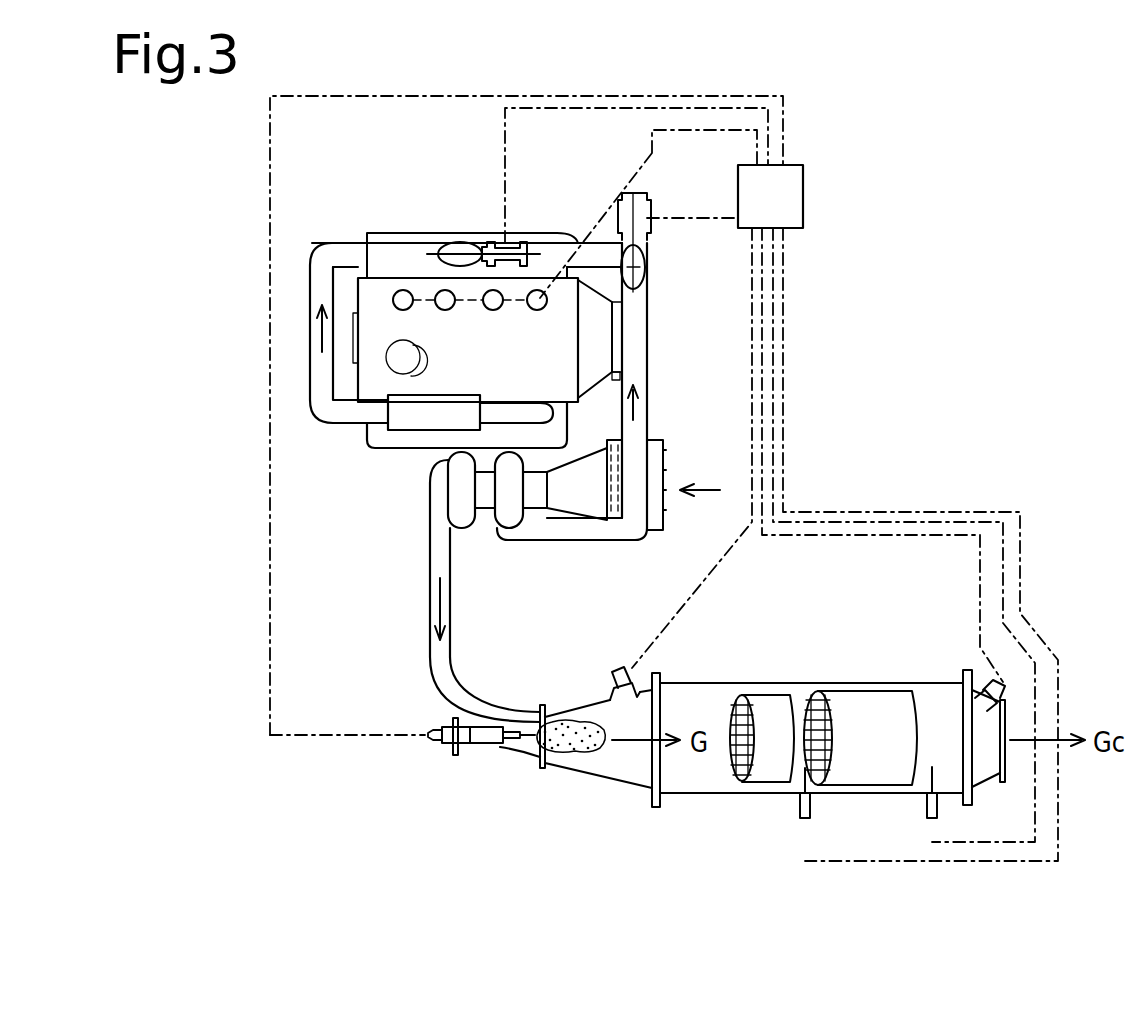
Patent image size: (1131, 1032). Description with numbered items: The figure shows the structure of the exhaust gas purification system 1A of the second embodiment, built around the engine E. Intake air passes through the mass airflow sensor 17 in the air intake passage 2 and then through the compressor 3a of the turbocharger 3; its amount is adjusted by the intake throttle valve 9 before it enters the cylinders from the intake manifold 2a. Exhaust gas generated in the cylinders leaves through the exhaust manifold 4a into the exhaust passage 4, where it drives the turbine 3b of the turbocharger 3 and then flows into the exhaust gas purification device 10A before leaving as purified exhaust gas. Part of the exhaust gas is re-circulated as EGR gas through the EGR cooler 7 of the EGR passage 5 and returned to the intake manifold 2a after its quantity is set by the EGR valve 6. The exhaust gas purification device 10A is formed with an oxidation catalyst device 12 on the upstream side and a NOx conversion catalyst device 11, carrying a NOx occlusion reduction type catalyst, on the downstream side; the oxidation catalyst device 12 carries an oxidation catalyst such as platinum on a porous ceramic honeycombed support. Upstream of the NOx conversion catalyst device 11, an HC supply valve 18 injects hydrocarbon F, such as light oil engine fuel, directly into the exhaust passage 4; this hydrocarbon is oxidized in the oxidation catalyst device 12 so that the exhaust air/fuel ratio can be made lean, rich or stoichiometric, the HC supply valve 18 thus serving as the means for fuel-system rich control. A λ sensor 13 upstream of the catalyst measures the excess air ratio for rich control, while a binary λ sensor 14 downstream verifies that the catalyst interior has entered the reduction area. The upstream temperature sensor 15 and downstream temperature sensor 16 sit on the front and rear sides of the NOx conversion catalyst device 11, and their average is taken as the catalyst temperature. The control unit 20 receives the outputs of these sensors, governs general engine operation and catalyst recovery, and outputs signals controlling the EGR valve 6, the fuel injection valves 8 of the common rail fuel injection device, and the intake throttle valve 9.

The exhaust gas purification system 1A is at (862, 372).
The engine E is at (423, 332).
The air intake passage 2 is at (613, 537).
The intake manifold 2a is at (417, 278).
The turbocharger 3 is at (446, 544).
The compressor 3a is at (510, 510).
The turbine 3b is at (463, 512).
The exhaust passage 4 is at (430, 657).
The exhaust manifold 4a is at (417, 437).
The EGR passage 5 is at (310, 389).
The EGR valve 6 is at (460, 254).
The EGR cooler 7 is at (408, 412).
The fuel injection valves 8 is at (540, 290).
The intake throttle valve 9 is at (646, 268).
The exhaust gas purification device 10A is at (715, 795).
The NOx conversion catalyst device 11 is at (868, 733).
The oxidation catalyst device 12 is at (783, 728).
The upstream λ sensor 13 is at (625, 672).
The downstream λ sensor 14 is at (1000, 680).
The upstream temperature sensor 15 is at (804, 818).
The downstream temperature sensor 16 is at (932, 818).
The mass airflow sensor 17 is at (585, 497).
The HC supply valve 18 is at (487, 747).
The control unit 20 is at (793, 187).
The hydrocarbon F is at (570, 750).